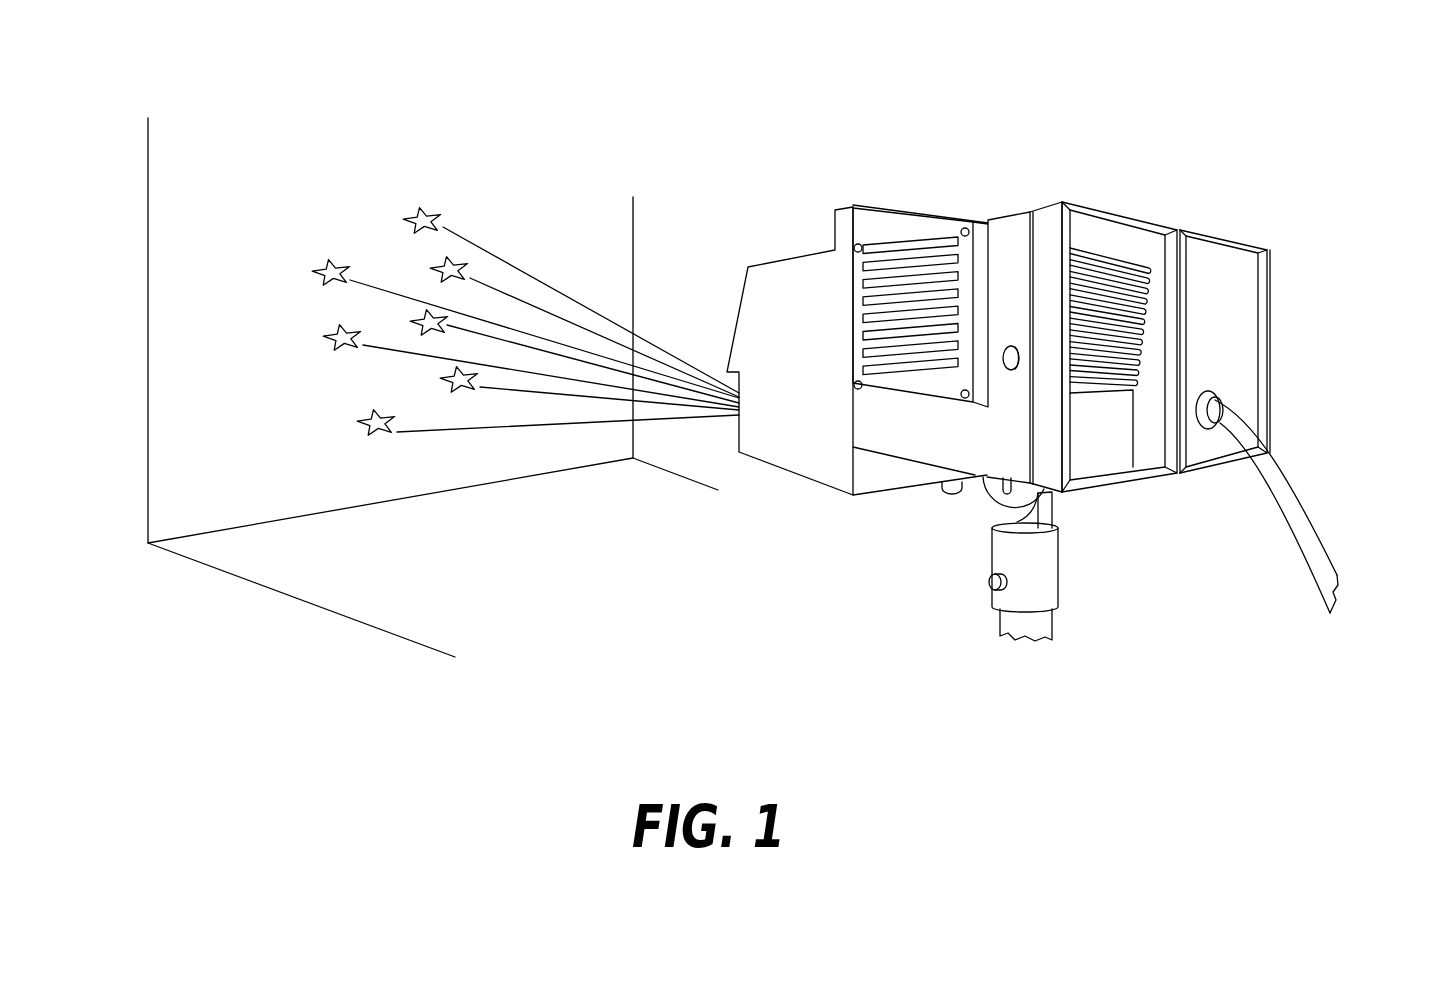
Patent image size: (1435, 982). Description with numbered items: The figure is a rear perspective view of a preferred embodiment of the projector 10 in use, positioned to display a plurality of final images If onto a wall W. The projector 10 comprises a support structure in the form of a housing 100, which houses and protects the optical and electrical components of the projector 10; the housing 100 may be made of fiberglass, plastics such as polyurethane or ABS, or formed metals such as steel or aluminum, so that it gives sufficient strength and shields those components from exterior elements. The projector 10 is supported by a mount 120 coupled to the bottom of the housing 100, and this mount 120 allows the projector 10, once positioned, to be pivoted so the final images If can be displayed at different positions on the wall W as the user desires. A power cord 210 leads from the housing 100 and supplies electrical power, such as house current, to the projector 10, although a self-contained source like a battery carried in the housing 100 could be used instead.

The projector 10 is at (1070, 335).
The housing 100 is at (1022, 213).
The mount 120 is at (978, 522).
The power cord 210 is at (1300, 508).
The wall W is at (165, 310).
The final images If is at (332, 264).